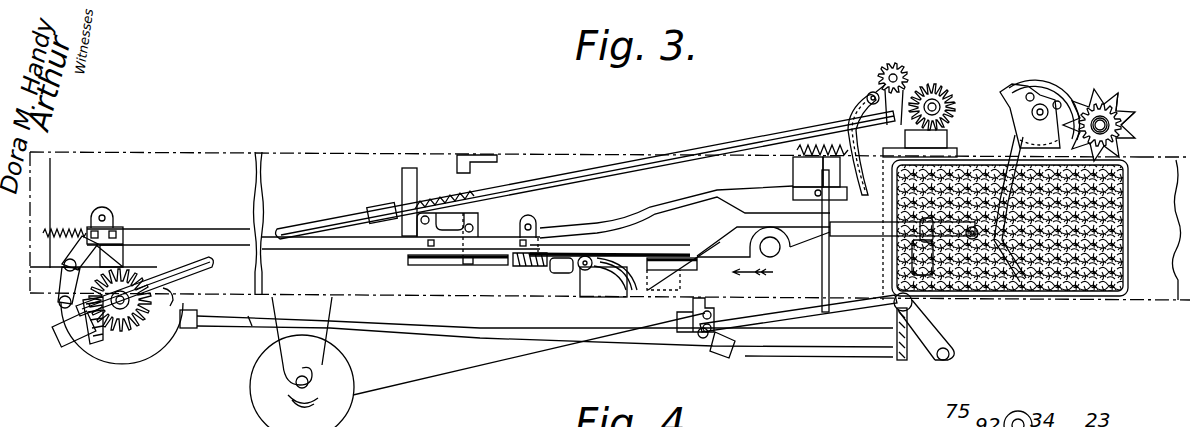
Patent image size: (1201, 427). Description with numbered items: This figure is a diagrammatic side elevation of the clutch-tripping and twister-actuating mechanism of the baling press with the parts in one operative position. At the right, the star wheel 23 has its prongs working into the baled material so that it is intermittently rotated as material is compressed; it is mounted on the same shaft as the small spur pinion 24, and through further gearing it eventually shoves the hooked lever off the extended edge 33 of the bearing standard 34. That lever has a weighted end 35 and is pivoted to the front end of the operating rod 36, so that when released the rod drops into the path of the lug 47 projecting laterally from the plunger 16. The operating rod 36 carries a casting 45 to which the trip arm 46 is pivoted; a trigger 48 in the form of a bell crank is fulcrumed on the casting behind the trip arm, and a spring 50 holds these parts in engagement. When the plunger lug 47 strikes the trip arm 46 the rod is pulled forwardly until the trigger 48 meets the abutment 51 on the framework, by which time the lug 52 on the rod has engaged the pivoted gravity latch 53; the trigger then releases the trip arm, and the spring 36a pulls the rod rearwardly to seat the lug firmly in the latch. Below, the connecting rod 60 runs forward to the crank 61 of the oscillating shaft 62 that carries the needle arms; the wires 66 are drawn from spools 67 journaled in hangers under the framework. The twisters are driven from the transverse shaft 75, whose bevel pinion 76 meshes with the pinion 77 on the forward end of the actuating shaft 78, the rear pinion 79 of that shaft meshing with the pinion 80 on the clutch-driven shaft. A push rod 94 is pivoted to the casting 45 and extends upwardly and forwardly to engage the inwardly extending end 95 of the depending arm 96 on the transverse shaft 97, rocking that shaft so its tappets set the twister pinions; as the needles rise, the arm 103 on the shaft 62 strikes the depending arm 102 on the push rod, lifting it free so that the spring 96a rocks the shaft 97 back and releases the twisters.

The plunger 16 is at (793, 192).
The star wheel 23 is at (1130, 94).
The spur pinion 24 is at (1125, 119).
The extended edge 33 is at (1008, 128).
The bearing standard 34 is at (1096, 92).
The weighted end 35 is at (1008, 292).
The operating rod 36 is at (385, 249).
The spring 36a is at (62, 230).
The casting 45 is at (450, 236).
The trip arm 46 is at (472, 265).
The lug 47 is at (660, 258).
The trigger 48 is at (402, 184).
The spring 50 is at (462, 205).
The abutment 51 is at (475, 155).
The lug 52 is at (528, 266).
The gravity latch 53 is at (570, 274).
The connecting rod 60 is at (810, 349).
The crank 61 is at (925, 322).
The shaft 62 is at (893, 301).
The wires 66 is at (521, 359).
The spools 67 is at (352, 405).
The transverse shaft 75 is at (950, 108).
The bevel pinion 76 is at (946, 100).
The pinion 77 is at (907, 80).
The actuating shaft 78 is at (214, 266).
The pinion 79 is at (90, 346).
The pinion 80 is at (140, 354).
The push rod 94 is at (708, 195).
The inwardly extending end 95 is at (836, 192).
The depending arm 96 is at (848, 112).
The spring 96a is at (862, 165).
The transverse shaft 97 is at (868, 92).
The depending arm 102 is at (858, 252).
The arm 103 is at (897, 338).